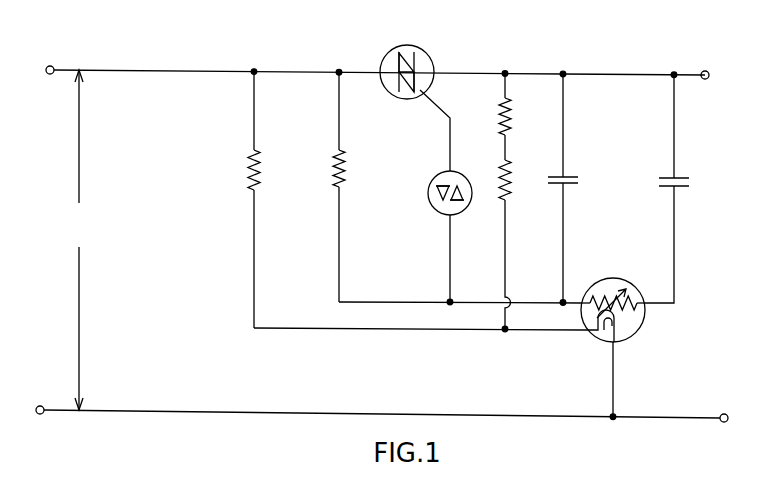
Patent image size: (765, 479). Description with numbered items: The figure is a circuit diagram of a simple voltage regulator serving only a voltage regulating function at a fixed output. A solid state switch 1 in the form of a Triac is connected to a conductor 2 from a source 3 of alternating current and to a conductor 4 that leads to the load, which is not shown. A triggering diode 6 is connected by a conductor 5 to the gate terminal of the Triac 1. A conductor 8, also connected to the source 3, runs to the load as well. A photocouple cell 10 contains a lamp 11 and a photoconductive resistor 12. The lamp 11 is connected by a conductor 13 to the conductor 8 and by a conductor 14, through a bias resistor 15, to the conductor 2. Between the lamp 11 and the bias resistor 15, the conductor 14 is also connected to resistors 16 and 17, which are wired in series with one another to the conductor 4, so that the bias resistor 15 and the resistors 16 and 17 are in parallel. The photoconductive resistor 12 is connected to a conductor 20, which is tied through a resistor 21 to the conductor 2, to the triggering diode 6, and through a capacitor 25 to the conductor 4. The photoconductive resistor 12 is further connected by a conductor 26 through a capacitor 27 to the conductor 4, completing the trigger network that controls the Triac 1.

The solid state switch 1 is at (432, 56).
The conductor 2 is at (128, 70).
The source 3 is at (104, 219).
The conductor 4 is at (586, 74).
The conductor 5 is at (450, 147).
The triggering diode 6 is at (432, 212).
The conductor 8 is at (166, 418).
The photocouple cell 10 is at (645, 318).
The lamp 11 is at (606, 340).
The photoconductive resistor 12 is at (628, 262).
The conductor 13 is at (614, 383).
The conductor 14 is at (398, 333).
The bias resistor 15 is at (261, 189).
The resistor 16 is at (511, 121).
The resistor 17 is at (510, 200).
The conductor 20 is at (416, 287).
The resistor 21 is at (347, 171).
The capacitor 25 is at (577, 178).
The conductor 26 is at (676, 272).
The capacitor 27 is at (690, 181).